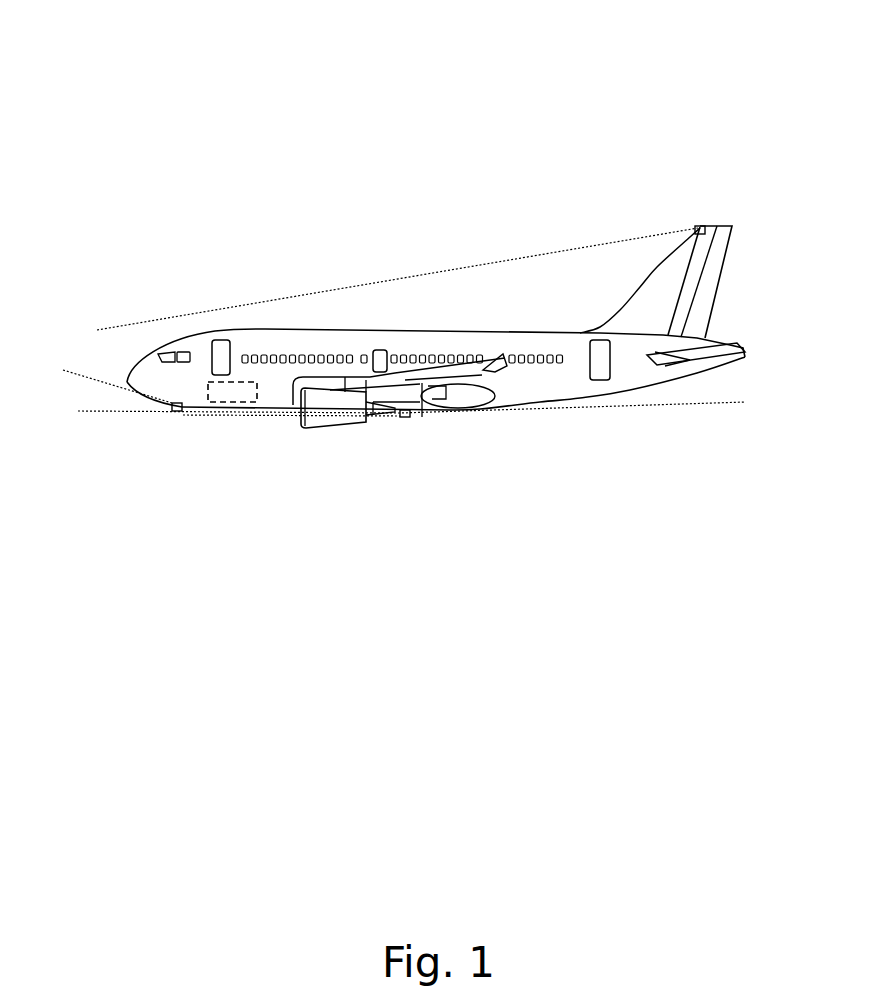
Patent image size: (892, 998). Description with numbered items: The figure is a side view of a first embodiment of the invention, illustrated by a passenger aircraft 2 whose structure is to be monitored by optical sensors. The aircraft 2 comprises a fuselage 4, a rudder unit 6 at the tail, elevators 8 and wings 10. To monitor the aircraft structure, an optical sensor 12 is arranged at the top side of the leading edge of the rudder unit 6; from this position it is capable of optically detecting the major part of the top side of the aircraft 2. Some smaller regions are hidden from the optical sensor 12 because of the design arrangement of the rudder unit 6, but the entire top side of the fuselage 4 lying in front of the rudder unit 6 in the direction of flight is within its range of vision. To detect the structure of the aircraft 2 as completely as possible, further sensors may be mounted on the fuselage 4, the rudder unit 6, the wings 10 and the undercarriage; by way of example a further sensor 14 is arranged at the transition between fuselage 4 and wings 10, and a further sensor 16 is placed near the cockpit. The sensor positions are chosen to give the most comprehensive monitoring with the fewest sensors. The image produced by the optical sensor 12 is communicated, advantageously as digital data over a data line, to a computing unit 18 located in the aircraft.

The passenger aircraft 2 is at (397, 241).
The fuselage 4 is at (553, 385).
The rudder unit 6 is at (677, 296).
The elevators 8 is at (697, 352).
The wings 10 is at (420, 392).
The optical sensor 12 is at (700, 225).
The further sensor 14 is at (408, 417).
The further sensor 16 is at (177, 412).
The computing unit 18 is at (233, 398).